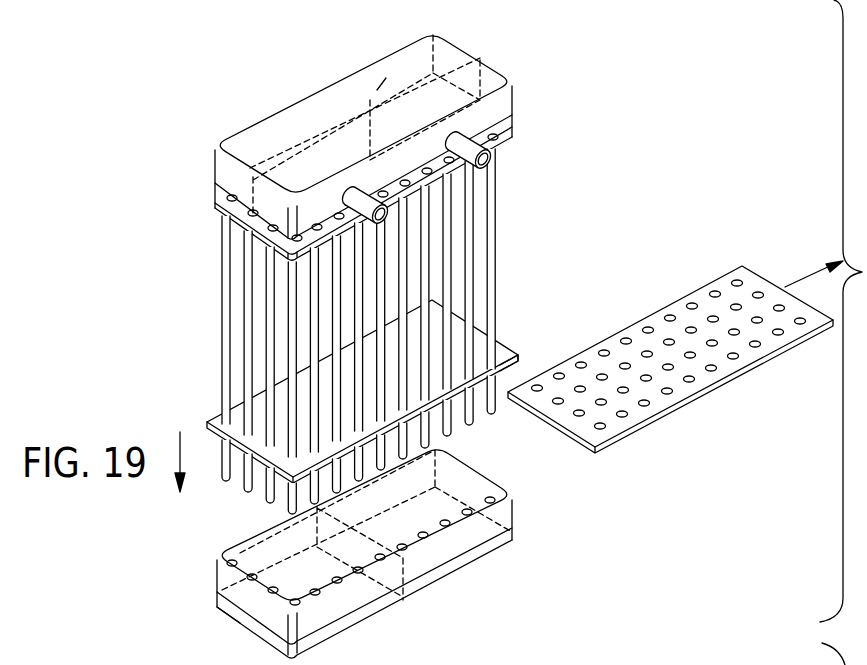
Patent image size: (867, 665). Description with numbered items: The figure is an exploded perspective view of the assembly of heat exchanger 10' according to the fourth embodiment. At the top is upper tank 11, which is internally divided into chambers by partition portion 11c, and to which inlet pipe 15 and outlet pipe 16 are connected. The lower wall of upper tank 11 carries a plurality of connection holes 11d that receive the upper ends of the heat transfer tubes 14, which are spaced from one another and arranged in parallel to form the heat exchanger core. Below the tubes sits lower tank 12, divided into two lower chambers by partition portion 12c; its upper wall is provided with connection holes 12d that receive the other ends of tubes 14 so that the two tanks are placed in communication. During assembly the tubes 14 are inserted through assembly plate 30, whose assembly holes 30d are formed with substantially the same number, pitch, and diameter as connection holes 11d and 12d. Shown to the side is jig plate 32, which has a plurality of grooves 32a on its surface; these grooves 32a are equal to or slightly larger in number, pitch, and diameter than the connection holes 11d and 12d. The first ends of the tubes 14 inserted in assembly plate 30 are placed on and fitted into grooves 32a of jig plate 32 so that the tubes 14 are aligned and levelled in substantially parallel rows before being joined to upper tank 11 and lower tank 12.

The heat exchanger 10' is at (459, 329).
The upper tank 11 is at (497, 58).
The partition portion 11c is at (397, 52).
The connection holes 11d is at (512, 123).
The lower tank 12 is at (527, 489).
The partition portion 12c is at (403, 600).
The connection holes 12d is at (232, 553).
The heat transfer tubes 14 is at (498, 210).
The inlet pipe 15 is at (349, 204).
The outlet pipe 16 is at (490, 157).
The assembly plate 30 is at (214, 420).
The assembly holes 30d is at (520, 356).
The jig plate 32 is at (661, 305).
The grooves 32a is at (733, 355).